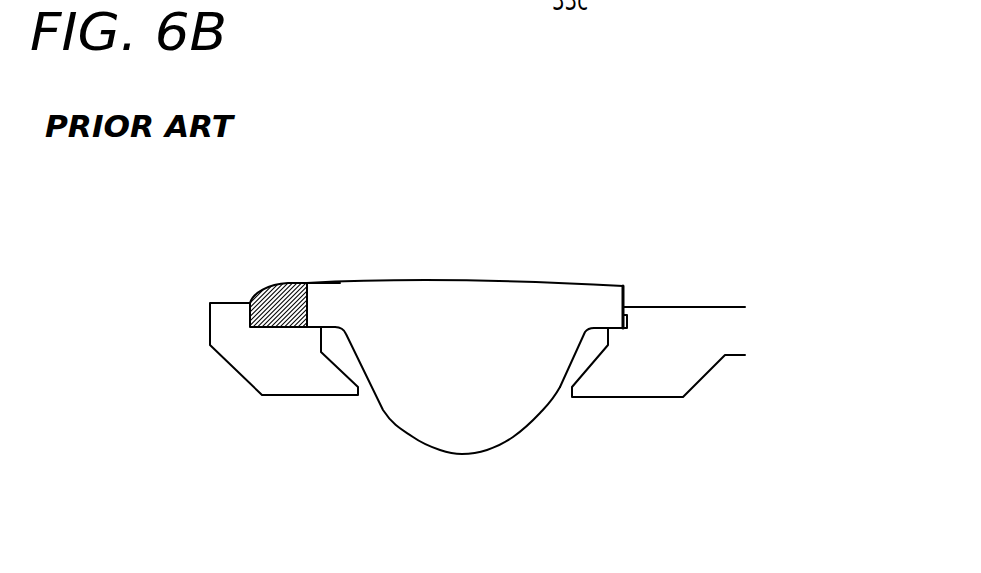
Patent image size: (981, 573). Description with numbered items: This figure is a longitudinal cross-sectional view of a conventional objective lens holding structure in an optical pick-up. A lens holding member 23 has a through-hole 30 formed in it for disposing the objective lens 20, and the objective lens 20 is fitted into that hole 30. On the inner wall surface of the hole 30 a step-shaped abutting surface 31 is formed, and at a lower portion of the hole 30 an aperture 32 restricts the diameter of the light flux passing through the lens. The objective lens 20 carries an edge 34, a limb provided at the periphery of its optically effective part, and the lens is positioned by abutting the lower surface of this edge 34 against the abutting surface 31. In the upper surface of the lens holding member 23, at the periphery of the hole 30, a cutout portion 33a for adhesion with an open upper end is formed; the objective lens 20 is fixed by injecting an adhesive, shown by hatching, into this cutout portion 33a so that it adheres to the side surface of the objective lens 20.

The objective lens 20 is at (458, 312).
The lens holding member 23 is at (678, 338).
The through-hole 30 is at (337, 343).
The abutting surface 31 is at (615, 316).
The aperture 32 is at (562, 395).
The cutout portion for adhesion 33a is at (282, 290).
The edge 34 is at (328, 307).